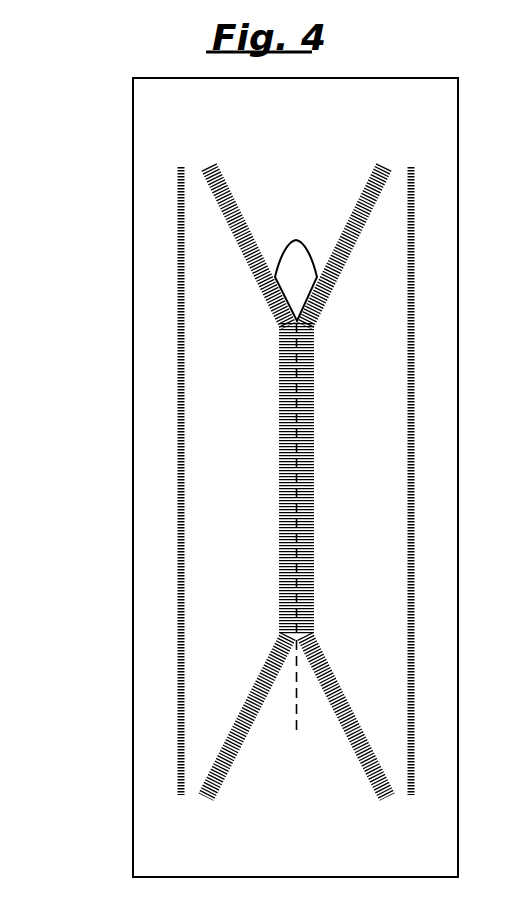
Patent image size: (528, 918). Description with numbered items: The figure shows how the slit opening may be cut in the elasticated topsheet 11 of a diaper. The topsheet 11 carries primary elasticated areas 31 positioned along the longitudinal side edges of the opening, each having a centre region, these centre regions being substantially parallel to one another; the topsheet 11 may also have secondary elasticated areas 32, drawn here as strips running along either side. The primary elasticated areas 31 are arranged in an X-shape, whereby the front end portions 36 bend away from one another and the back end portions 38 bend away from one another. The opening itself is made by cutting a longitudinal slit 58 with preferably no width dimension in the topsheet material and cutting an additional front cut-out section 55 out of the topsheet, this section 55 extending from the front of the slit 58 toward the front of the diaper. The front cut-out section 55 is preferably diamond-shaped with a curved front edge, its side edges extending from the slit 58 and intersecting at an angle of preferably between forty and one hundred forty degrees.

The topsheet 11 is at (178, 838).
The primary elasticated areas 31 is at (289, 457).
The secondary elasticated areas 32 is at (180, 480).
The front end portions 36 is at (347, 260).
The back end portions 38 is at (249, 701).
The front cut-out section 55 is at (291, 251).
The longitudinal slit 58 is at (298, 708).